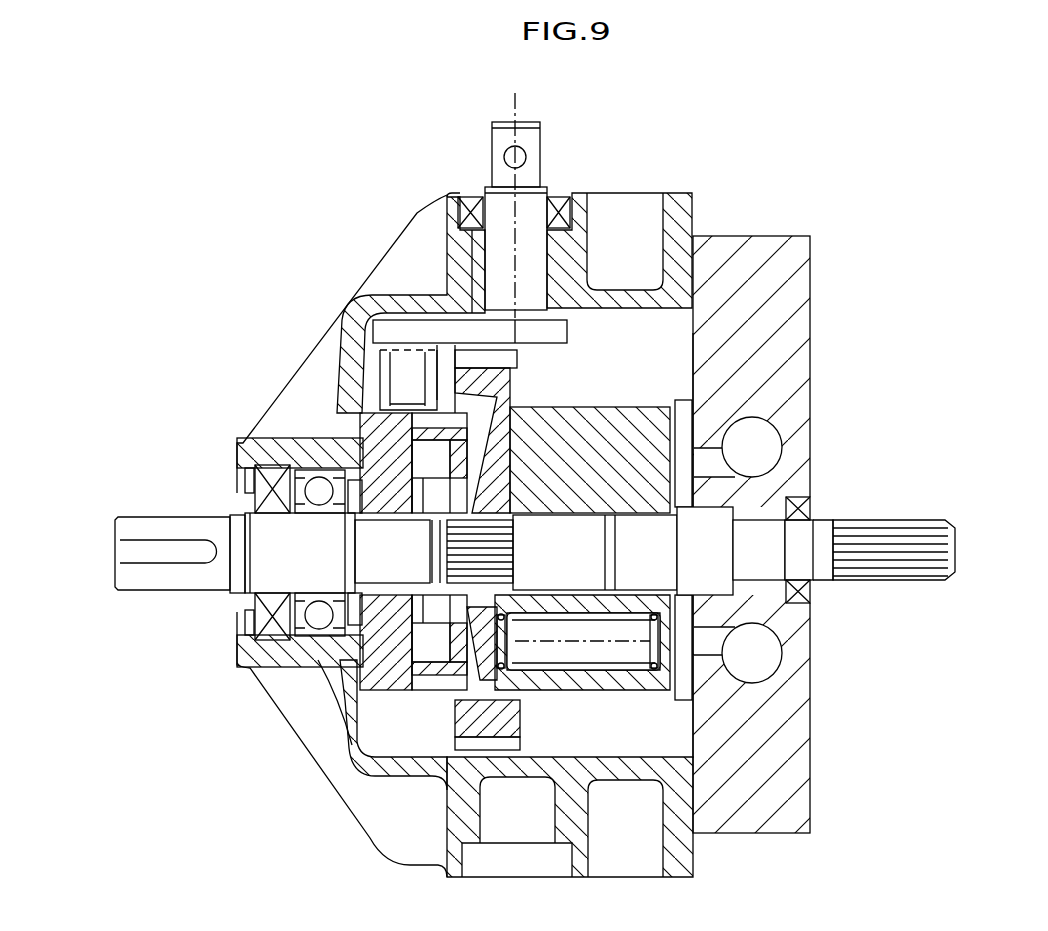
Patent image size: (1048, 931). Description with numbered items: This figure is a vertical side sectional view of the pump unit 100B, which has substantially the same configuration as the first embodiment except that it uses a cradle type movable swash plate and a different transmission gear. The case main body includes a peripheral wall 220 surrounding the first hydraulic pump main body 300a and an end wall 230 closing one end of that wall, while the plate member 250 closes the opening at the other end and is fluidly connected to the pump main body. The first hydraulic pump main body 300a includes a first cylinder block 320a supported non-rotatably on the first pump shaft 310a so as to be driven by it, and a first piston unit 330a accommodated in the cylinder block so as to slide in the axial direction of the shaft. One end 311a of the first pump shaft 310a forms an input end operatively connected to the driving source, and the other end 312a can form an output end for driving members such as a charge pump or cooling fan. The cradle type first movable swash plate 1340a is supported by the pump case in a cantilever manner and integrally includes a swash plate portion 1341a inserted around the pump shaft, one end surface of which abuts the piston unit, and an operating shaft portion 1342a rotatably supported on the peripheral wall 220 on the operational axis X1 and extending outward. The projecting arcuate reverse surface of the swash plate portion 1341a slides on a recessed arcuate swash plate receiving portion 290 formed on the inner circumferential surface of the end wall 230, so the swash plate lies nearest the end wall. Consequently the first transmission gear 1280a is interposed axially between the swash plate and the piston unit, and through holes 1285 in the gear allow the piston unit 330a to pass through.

The pump unit 100B is at (953, 209).
The peripheral wall 220 is at (427, 305).
The end wall 230 is at (352, 448).
The plate member 250 is at (783, 258).
The first movable swash plate 1340a is at (362, 366).
The swash plate portion 1341a is at (358, 425).
The operating shaft portion 1342a is at (525, 212).
The swash plate receiving portion 290 is at (357, 660).
The through holes 1285 is at (450, 690).
The first transmission gear 1280a is at (457, 737).
The first hydraulic pump main body 300a is at (590, 389).
The first cylinder block 320a is at (585, 448).
The first piston unit 330a is at (578, 640).
The one end of the first pump shaft 311a is at (148, 548).
The first pump shaft 310a is at (757, 550).
The other end of the first pump shaft 312a is at (920, 547).
The operational axis X1 is at (522, 102).